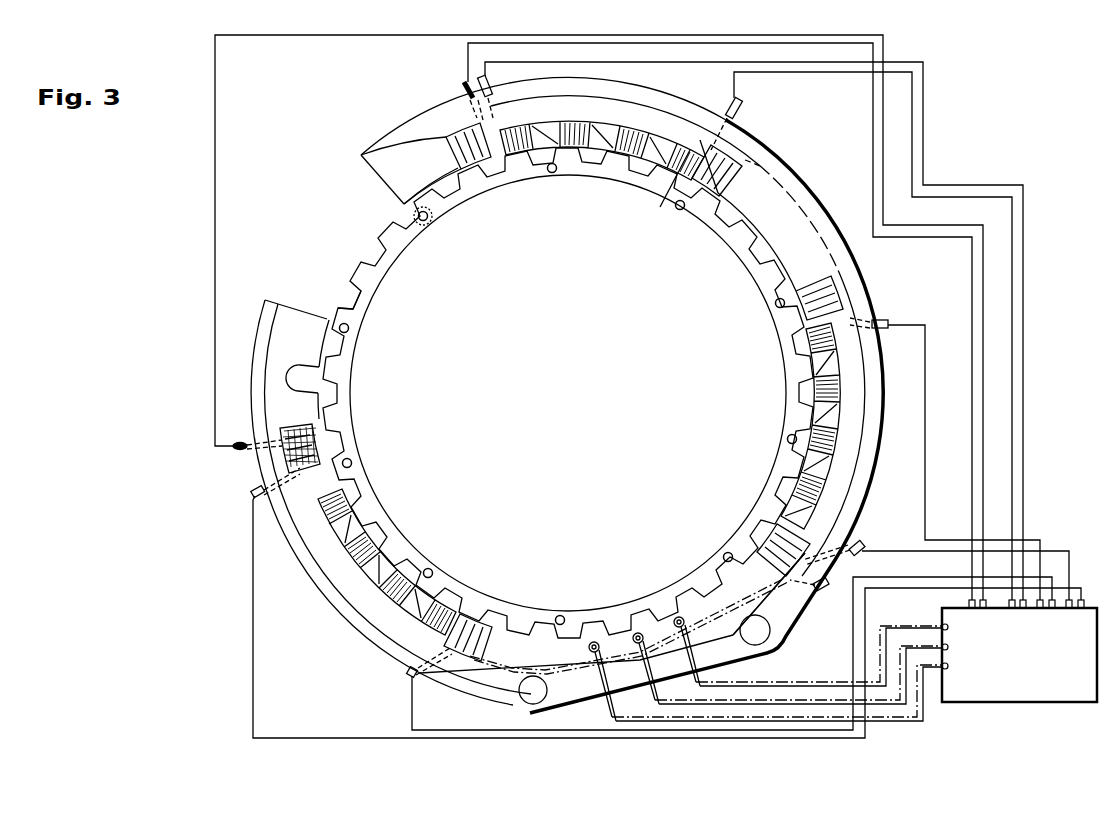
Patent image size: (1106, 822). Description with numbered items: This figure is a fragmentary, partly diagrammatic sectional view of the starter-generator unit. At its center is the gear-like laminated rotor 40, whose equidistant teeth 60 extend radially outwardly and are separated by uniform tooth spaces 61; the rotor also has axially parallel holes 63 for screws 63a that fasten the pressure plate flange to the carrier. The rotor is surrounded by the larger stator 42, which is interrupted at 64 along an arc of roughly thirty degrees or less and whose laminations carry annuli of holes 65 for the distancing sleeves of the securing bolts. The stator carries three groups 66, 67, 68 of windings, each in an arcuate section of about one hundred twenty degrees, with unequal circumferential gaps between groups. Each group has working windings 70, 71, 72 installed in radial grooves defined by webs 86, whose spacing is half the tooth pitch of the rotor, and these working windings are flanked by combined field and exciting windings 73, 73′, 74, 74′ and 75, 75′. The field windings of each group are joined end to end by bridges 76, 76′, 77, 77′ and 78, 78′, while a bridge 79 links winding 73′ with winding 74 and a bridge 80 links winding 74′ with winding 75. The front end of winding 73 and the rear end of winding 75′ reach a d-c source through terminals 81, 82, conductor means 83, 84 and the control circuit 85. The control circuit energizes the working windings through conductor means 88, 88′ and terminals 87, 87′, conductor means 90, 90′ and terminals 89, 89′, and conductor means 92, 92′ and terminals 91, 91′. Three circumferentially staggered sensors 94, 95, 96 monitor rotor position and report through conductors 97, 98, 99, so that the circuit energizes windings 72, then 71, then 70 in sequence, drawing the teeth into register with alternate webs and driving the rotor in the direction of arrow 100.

The rotor 40 is at (405, 266).
The stator 42 is at (376, 130).
The teeth 60 is at (337, 276).
The tooth spaces 61 is at (362, 270).
The holes 63 is at (350, 328).
The screws 63a is at (430, 226).
The interruption 64 is at (330, 242).
The holes 65 is at (528, 692).
The first group of windings 66 is at (664, 110).
The second group of windings 67 is at (876, 387).
The third group of windings 68 is at (339, 590).
The working windings 70 is at (580, 158).
The working windings 71 is at (806, 405).
The working windings 72 is at (312, 547).
The field winding 73 is at (475, 181).
The field winding 73' is at (717, 216).
The field winding 74 is at (788, 305).
The field winding 74' is at (758, 532).
The field winding 75 is at (468, 602).
The field winding 75' is at (340, 435).
The bridge 76 is at (754, 151).
The bridge 76' is at (771, 151).
The bridge 77 is at (744, 416).
The bridge 77' is at (818, 600).
The bridge 78 is at (398, 499).
The bridge 78' is at (383, 462).
The bridge 79 is at (803, 213).
The bridge 80 is at (572, 672).
The terminal 81 is at (462, 88).
The terminal 82 is at (232, 451).
The conductor means 83 is at (940, 238).
The conductor means 84 is at (215, 125).
The control circuit 85 is at (1025, 654).
The webs 86 is at (665, 191).
The terminal 87 is at (509, 99).
The terminal 87' is at (748, 121).
The conductor means 88 is at (754, 331).
The conductor means 88' is at (873, 336).
The terminal 89 is at (877, 300).
The terminal 89' is at (856, 536).
The conductor means 90 is at (969, 462).
The conductor means 90' is at (980, 545).
The terminal 91 is at (402, 671).
The terminal 91' is at (244, 497).
The conductor means 92 is at (704, 653).
The conductor means 92' is at (667, 617).
The sensor 94 is at (679, 615).
The sensor 95 is at (638, 632).
The sensor 96 is at (594, 641).
The conductor 97 is at (796, 680).
The conductor 98 is at (828, 698).
The conductor 99 is at (905, 723).
The arrow 100 is at (711, 373).